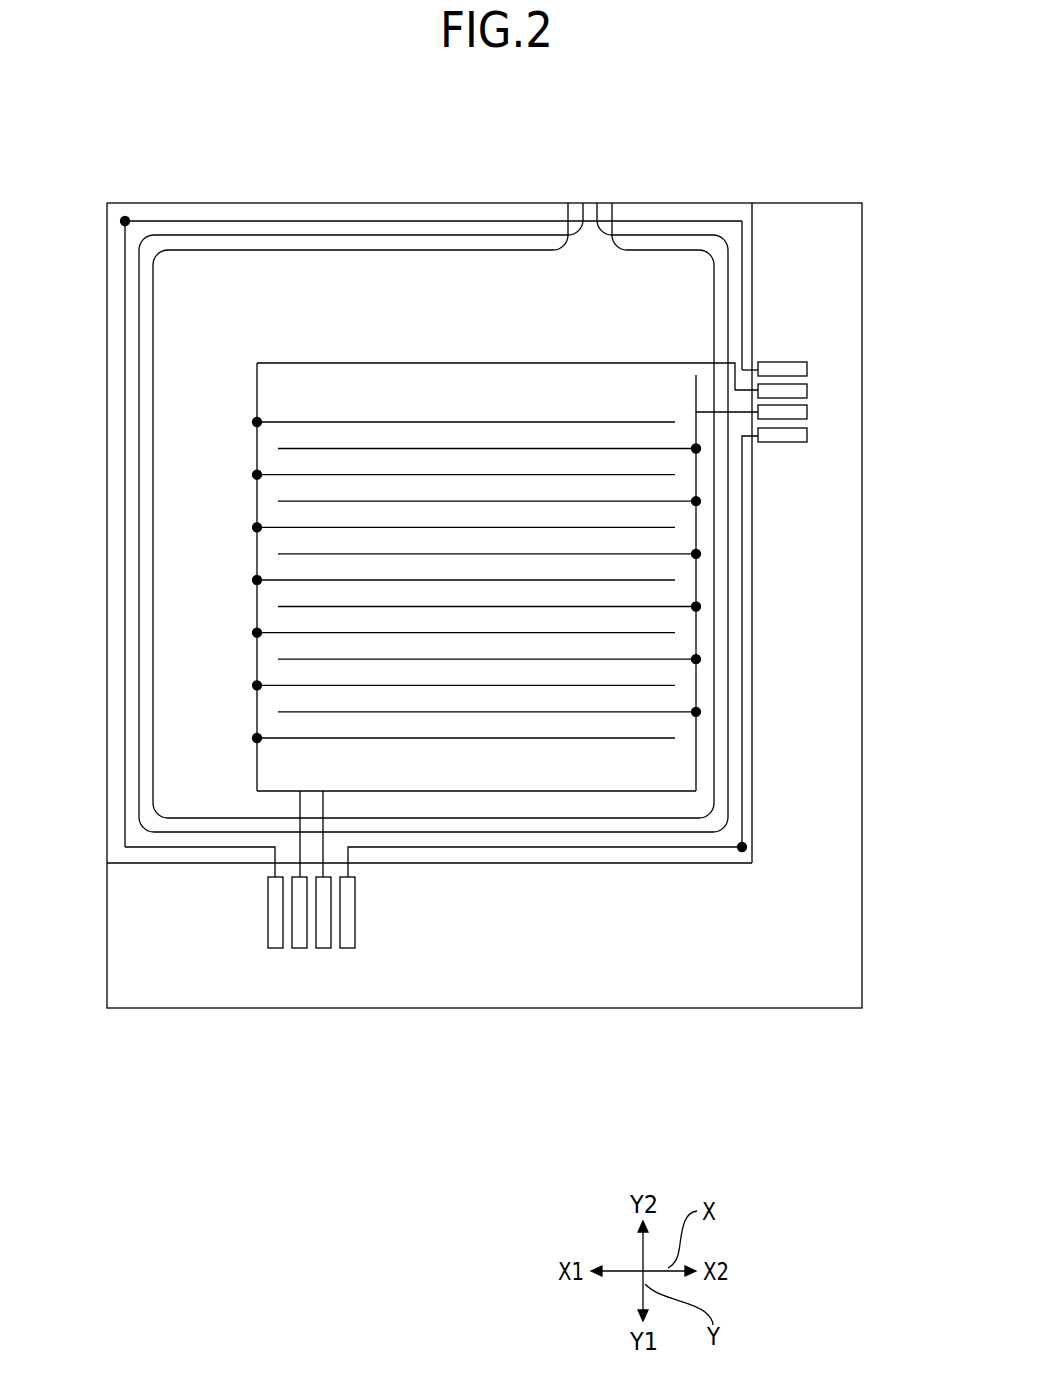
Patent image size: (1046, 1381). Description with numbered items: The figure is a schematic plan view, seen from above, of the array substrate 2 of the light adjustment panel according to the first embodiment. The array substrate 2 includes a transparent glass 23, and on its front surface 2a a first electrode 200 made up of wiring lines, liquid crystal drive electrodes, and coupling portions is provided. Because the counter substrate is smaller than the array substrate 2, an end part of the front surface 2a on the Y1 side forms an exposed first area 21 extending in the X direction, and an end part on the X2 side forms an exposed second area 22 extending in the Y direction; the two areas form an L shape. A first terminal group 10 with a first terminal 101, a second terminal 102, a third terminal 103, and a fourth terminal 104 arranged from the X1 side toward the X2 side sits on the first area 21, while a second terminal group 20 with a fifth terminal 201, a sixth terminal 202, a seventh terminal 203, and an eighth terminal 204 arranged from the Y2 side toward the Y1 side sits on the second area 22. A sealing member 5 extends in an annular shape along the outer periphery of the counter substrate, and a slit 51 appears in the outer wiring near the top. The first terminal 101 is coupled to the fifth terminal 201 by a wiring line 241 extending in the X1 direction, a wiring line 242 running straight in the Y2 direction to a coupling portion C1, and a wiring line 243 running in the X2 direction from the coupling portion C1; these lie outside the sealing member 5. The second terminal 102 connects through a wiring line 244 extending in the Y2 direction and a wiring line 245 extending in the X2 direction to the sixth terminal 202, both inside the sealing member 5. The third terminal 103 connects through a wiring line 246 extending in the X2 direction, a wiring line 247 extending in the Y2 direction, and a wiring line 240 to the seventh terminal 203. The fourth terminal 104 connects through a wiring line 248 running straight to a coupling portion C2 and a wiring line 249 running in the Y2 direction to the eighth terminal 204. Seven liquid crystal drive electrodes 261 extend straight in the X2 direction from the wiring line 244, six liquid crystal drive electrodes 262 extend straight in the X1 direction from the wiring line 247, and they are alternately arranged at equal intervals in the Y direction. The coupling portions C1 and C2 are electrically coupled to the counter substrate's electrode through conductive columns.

The array substrate 2 is at (645, 140).
The front surface 2a is at (830, 990).
The sealing member 5 is at (261, 245).
The first terminal group 10 is at (298, 1008).
The second terminal group 20 is at (857, 387).
The first area 21 is at (130, 990).
The second area 22 is at (830, 237).
The transparent glass 23 is at (178, 213).
The slit 51 is at (592, 202).
The first terminal 101 is at (276, 949).
The second terminal 102 is at (300, 949).
The third terminal 103 is at (324, 949).
The fourth terminal 104 is at (363, 986).
The first electrode 200 is at (391, 354).
The fifth terminal 201 is at (808, 369).
The sixth terminal 202 is at (808, 391).
The seventh terminal 203 is at (808, 413).
The eighth terminal 204 is at (834, 425).
The wiring line 240 is at (700, 416).
The wiring line 241 is at (233, 848).
The wiring line 242 is at (124, 652).
The wiring line 243 is at (423, 219).
The wiring line 244 is at (253, 505).
The wiring line 245 is at (487, 360).
The wiring line 246 is at (520, 792).
The wiring line 247 is at (698, 685).
The wiring line 248 is at (431, 848).
The wiring line 249 is at (743, 820).
The liquid crystal drive electrodes 261 is at (332, 737).
The liquid crystal drive electrodes 262 is at (612, 710).
The coupling portion C1 is at (124, 222).
The coupling portion C2 is at (742, 847).